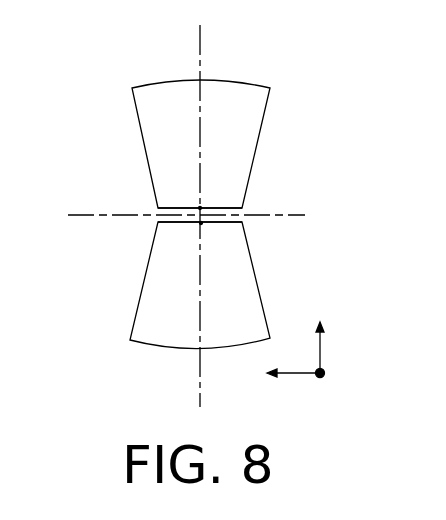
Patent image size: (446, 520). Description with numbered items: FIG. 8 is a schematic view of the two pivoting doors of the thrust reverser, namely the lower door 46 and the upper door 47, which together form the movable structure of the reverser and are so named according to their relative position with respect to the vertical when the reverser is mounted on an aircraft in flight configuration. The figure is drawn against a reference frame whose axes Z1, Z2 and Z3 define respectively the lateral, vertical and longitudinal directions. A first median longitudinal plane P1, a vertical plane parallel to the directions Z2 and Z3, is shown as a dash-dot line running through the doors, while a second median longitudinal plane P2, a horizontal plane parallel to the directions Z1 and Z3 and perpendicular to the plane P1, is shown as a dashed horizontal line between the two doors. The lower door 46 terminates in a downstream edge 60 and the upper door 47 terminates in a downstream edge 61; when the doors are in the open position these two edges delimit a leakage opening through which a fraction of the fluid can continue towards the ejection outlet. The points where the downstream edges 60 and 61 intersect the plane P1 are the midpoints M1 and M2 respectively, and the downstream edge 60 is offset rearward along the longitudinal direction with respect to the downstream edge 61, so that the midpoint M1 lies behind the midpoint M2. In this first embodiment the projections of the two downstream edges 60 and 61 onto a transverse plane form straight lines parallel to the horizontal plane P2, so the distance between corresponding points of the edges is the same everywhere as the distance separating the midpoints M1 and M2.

The lower door 46 is at (176, 340).
The upper door 47 is at (234, 96).
The downstream edge of the lower door 60 is at (184, 219).
The downstream edge of the upper door 61 is at (224, 207).
The midpoint of the downstream edge of the lower door M1 is at (202, 224).
The midpoint of the downstream edge of the upper door M2 is at (201, 207).
The first median longitudinal plane P1 is at (198, 30).
The second median longitudinal plane P2 is at (80, 214).
The lateral direction Z1 is at (286, 392).
The vertical direction Z2 is at (341, 337).
The longitudinal direction Z3 is at (342, 386).